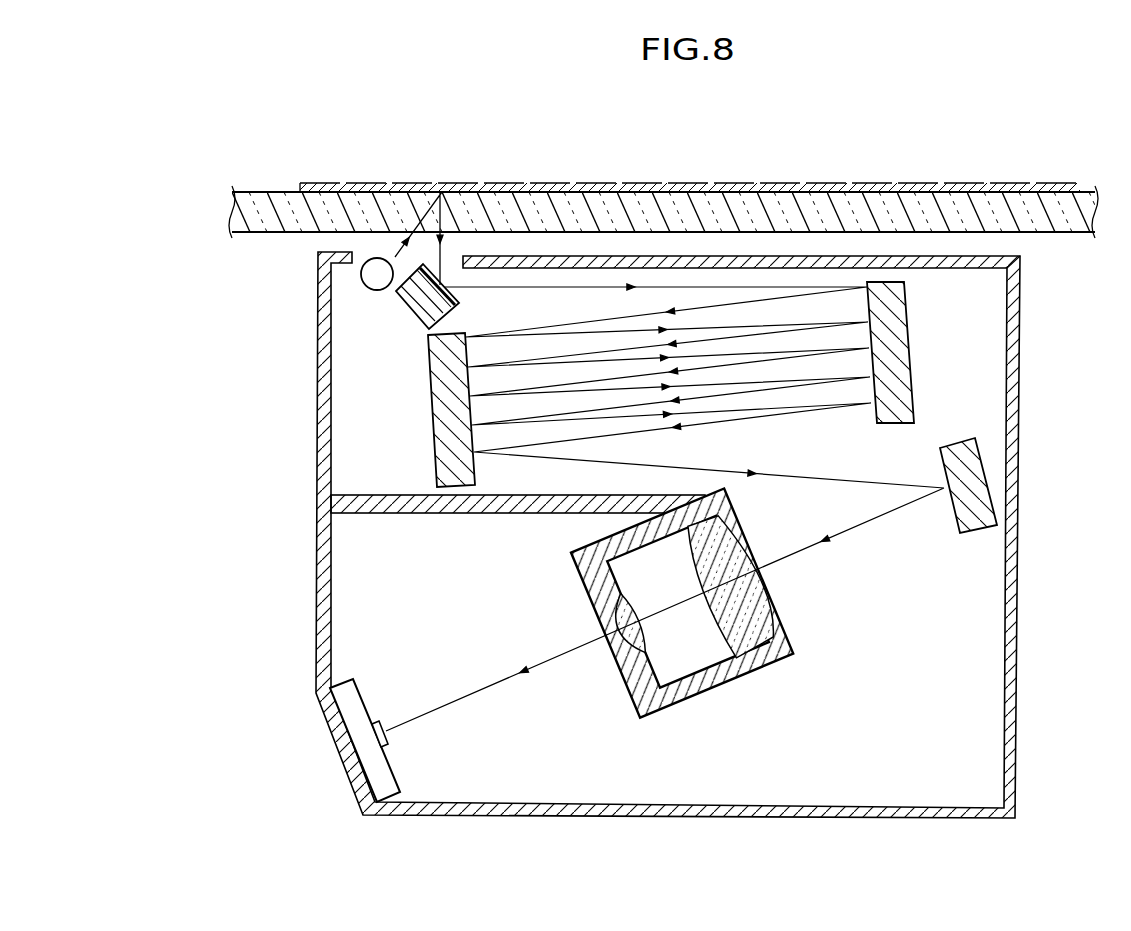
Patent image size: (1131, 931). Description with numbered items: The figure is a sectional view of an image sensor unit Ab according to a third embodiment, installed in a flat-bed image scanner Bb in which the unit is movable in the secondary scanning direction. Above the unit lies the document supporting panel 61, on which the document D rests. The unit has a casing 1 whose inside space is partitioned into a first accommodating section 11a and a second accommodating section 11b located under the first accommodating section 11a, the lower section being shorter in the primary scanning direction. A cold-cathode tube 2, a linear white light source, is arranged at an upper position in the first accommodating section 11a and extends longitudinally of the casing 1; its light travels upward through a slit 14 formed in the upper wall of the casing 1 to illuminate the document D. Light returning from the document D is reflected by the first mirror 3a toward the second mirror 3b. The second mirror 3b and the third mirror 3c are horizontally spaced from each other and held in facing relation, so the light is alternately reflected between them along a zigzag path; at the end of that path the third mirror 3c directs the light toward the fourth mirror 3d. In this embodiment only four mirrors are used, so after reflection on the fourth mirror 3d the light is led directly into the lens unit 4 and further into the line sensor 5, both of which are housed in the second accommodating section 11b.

The document supporting panel 61 is at (258, 205).
The document D is at (530, 184).
The image scanner Bb is at (346, 120).
The image sensor unit Ab is at (264, 380).
The casing 1 is at (602, 535).
The first accommodating section 11a is at (350, 440).
The second accommodating section 11b is at (345, 585).
The cold-cathode tube 2 is at (367, 277).
The first mirror 3a is at (414, 307).
The second mirror 3b is at (893, 338).
The third mirror 3c is at (446, 405).
The fourth mirror 3d is at (973, 482).
The lens unit 4 is at (717, 696).
The line sensor 5 is at (392, 740).
The slit 14 is at (452, 253).